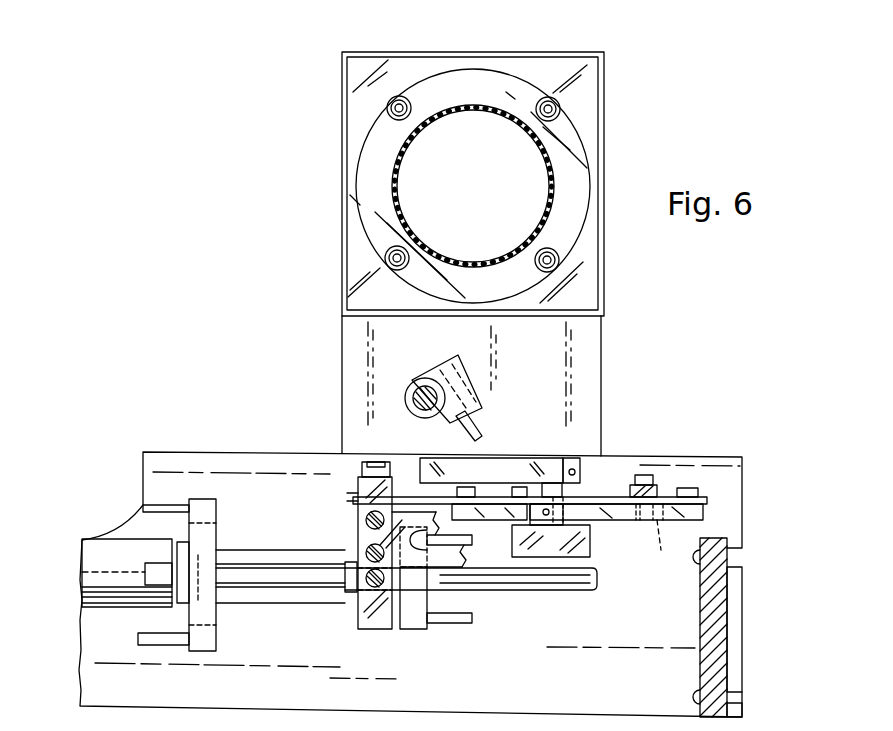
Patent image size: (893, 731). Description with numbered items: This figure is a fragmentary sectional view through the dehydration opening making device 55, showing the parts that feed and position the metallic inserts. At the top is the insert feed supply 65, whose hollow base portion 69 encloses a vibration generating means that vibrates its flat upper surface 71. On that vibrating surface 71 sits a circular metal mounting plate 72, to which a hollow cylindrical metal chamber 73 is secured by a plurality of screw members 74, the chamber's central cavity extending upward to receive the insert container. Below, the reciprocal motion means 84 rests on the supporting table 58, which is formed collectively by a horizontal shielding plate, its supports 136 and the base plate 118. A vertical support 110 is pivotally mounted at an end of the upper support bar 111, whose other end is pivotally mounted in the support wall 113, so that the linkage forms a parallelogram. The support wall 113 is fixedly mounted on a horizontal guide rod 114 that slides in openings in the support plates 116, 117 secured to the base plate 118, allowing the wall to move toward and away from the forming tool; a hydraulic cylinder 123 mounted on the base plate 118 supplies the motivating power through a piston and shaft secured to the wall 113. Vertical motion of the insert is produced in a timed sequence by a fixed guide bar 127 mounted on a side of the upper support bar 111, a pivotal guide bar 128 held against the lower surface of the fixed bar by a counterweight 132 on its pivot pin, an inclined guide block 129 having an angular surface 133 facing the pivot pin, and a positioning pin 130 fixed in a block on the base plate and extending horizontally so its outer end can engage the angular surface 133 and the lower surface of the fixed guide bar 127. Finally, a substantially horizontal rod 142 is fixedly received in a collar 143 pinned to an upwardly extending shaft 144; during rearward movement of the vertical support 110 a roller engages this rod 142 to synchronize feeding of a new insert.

The dehydration opening making device 55 is at (295, 323).
The supporting table 58 is at (206, 450).
The insert feed supply 65 is at (616, 128).
The hollow base portion 69 is at (590, 248).
The flat upper surface 71 is at (589, 289).
The circular metal mounting plate 72 is at (573, 170).
The hollow cylindrical metal chamber 73 is at (392, 185).
The screw members 74 is at (549, 108).
The reciprocal motion means 84 is at (659, 440).
The vertical support 110 is at (653, 488).
The upper support bar 111 is at (708, 500).
The support wall 113 is at (372, 617).
The horizontal guide rod 114 is at (483, 576).
The support plate 116 is at (203, 639).
The support plate 117 is at (417, 618).
The base plate 118 is at (733, 657).
The hydraulic cylinder 123 is at (120, 592).
The fixed guide bar 127 is at (708, 510).
The pivotal guide bar 128 is at (662, 547).
The inclined guide block 129 is at (500, 517).
The positioning pin 130 is at (560, 530).
The counterweight 132 is at (497, 468).
The angular surface 133 is at (532, 523).
The supports 136 is at (720, 603).
The horizontal rod 142 is at (478, 433).
The collar 143 is at (412, 370).
The shaft 144 is at (413, 399).